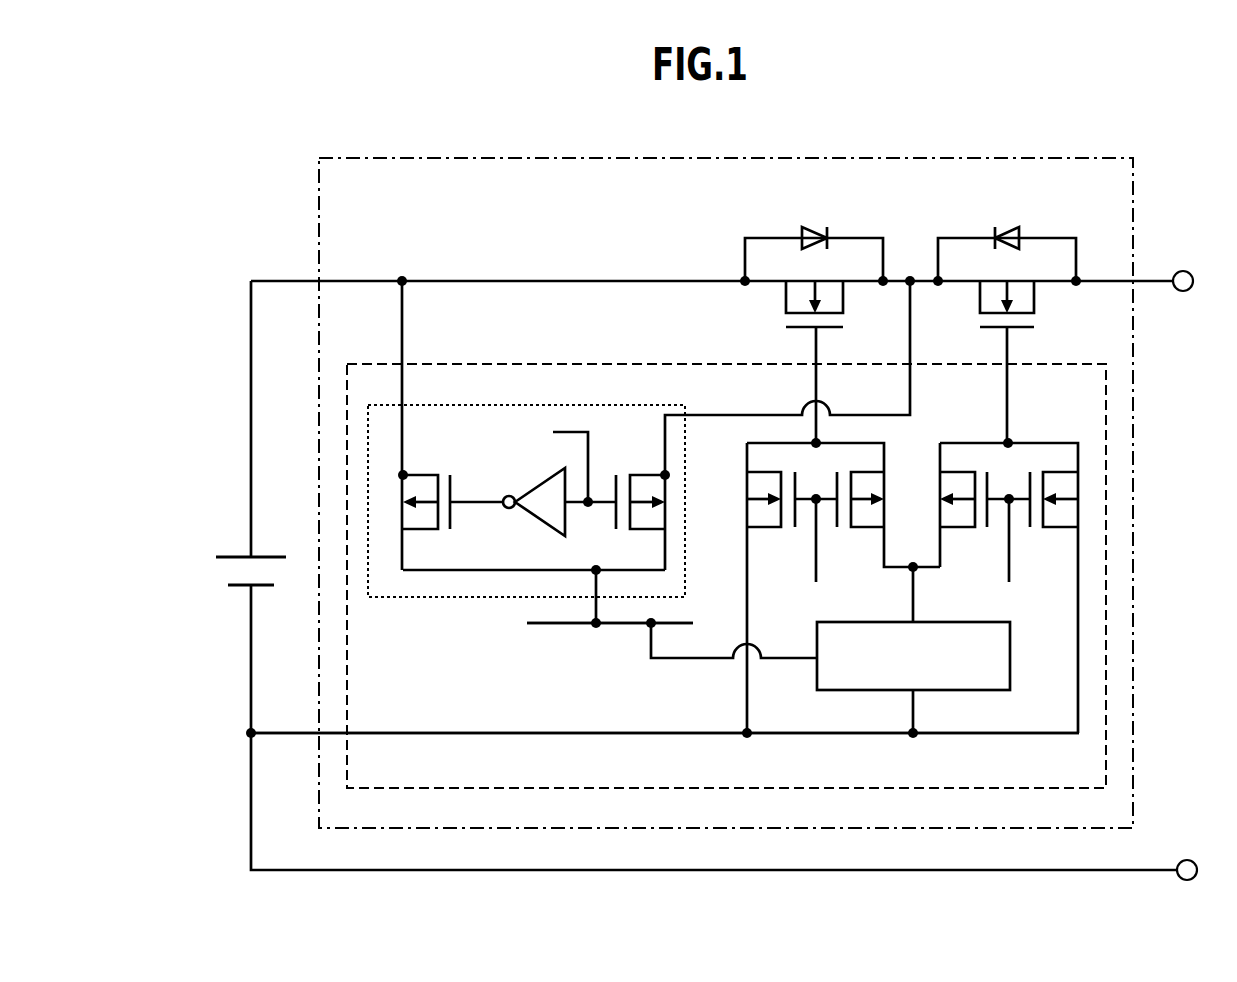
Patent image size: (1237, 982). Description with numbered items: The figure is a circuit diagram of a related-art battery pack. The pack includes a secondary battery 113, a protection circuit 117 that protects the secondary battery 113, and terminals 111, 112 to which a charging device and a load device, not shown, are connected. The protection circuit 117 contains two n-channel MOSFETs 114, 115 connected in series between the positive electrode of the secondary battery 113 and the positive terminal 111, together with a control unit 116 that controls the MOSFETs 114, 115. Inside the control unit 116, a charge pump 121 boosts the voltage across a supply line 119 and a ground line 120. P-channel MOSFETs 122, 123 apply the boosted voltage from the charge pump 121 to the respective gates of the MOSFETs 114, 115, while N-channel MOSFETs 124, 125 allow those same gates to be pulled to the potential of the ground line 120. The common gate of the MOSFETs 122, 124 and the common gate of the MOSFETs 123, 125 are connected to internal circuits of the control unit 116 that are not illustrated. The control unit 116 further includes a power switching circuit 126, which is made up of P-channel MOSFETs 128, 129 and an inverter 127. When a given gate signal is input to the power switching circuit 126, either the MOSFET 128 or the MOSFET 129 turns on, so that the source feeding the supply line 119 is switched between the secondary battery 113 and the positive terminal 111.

The positive terminal 111 is at (1183, 271).
The terminal 112 is at (1187, 860).
The secondary battery 113 is at (222, 556).
The n-channel MOSFET 114 is at (776, 238).
The n-channel MOSFET 115 is at (964, 238).
The control unit 116 is at (727, 788).
The protection circuit 117 is at (727, 829).
The supply line 119 is at (536, 624).
The ground line 120 is at (545, 734).
The charge pump 121 is at (930, 622).
The P-channel MOSFET 122 is at (868, 528).
The P-channel MOSFET 123 is at (945, 496).
The N-channel MOSFET 124 is at (745, 496).
The N-channel MOSFET 125 is at (1062, 528).
The power switching circuit 126 is at (535, 405).
The inverter 127 is at (530, 488).
The P-channel MOSFET 128 is at (436, 475).
The P-channel MOSFET 129 is at (638, 475).